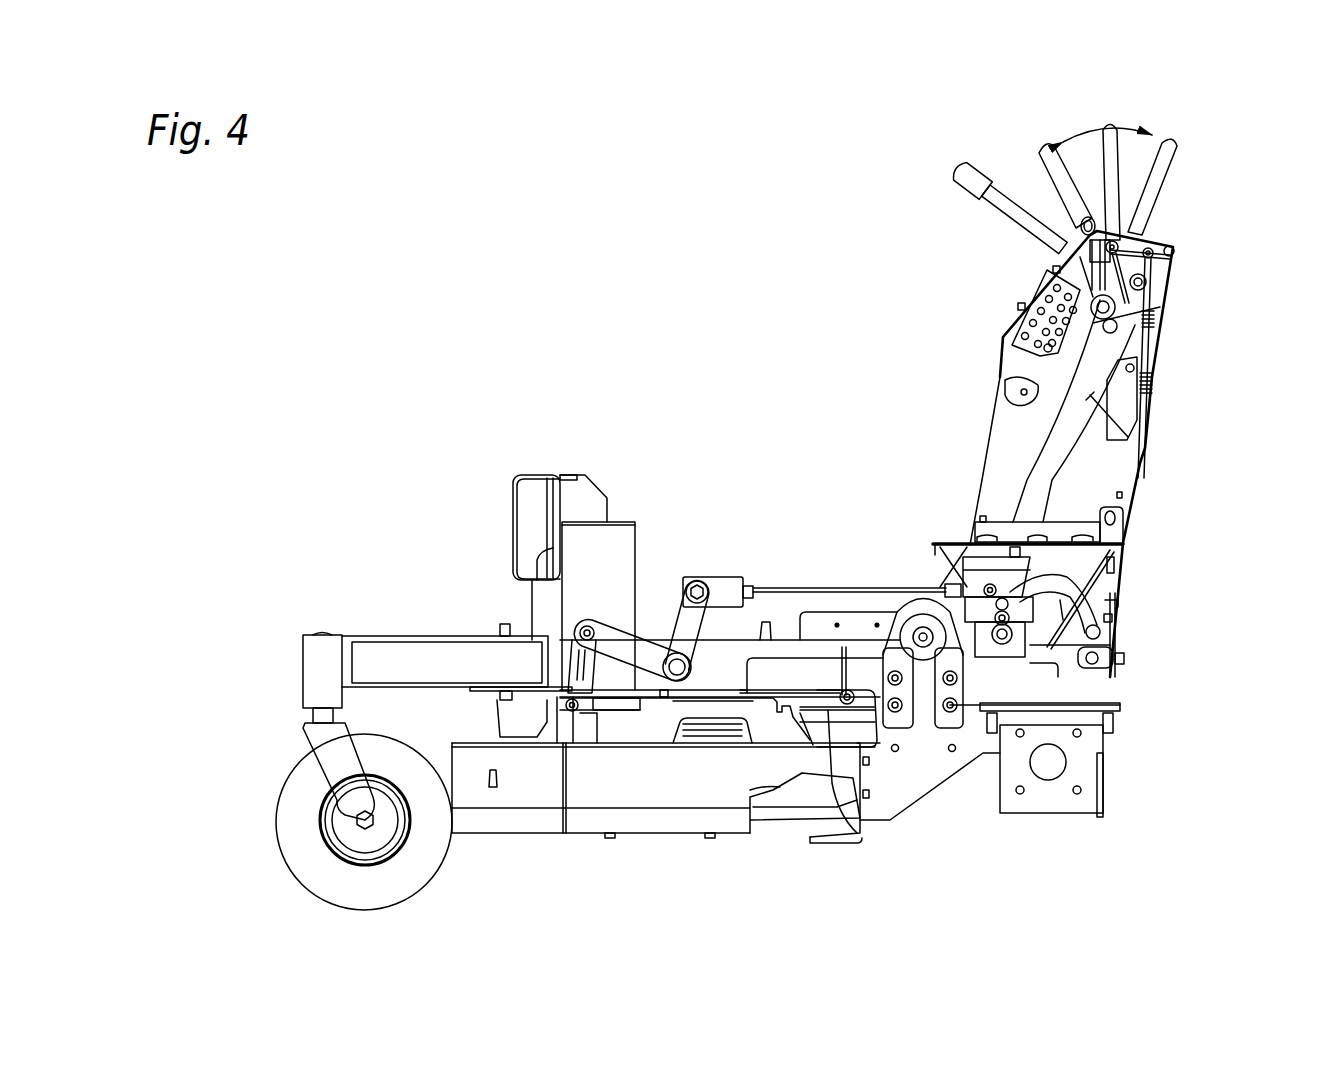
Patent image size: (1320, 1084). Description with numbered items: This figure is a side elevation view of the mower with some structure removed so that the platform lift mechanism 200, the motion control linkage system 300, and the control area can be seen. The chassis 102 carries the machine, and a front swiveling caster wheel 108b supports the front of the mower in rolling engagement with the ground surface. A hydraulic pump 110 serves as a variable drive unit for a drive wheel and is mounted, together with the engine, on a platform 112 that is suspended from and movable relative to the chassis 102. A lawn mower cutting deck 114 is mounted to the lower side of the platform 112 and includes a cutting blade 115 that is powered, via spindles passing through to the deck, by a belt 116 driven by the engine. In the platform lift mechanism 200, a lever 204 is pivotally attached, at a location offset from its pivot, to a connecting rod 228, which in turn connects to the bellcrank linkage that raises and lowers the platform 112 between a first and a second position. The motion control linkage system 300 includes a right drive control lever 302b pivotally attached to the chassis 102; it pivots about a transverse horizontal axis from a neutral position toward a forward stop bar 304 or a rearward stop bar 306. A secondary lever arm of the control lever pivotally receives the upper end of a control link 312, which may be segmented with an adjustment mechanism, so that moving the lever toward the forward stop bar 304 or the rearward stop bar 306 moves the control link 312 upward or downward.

The chassis 102 is at (988, 432).
The caster wheel 108b is at (287, 863).
The hydraulic pump 110 is at (935, 540).
The platform 112 is at (820, 660).
The cutting deck 114 is at (550, 833).
The cutting blade 115 is at (777, 836).
The belt 116 is at (857, 833).
The control assembly 200 is at (937, 205).
The lever 204 is at (962, 163).
The connecting rod 228 is at (1025, 488).
The motion control linkage system 300 is at (1143, 557).
The right drive control lever 302b is at (1106, 124).
The forward stop bar 304 is at (1037, 146).
The rearward stop bar 306 is at (1172, 140).
The control link 312 is at (1145, 449).